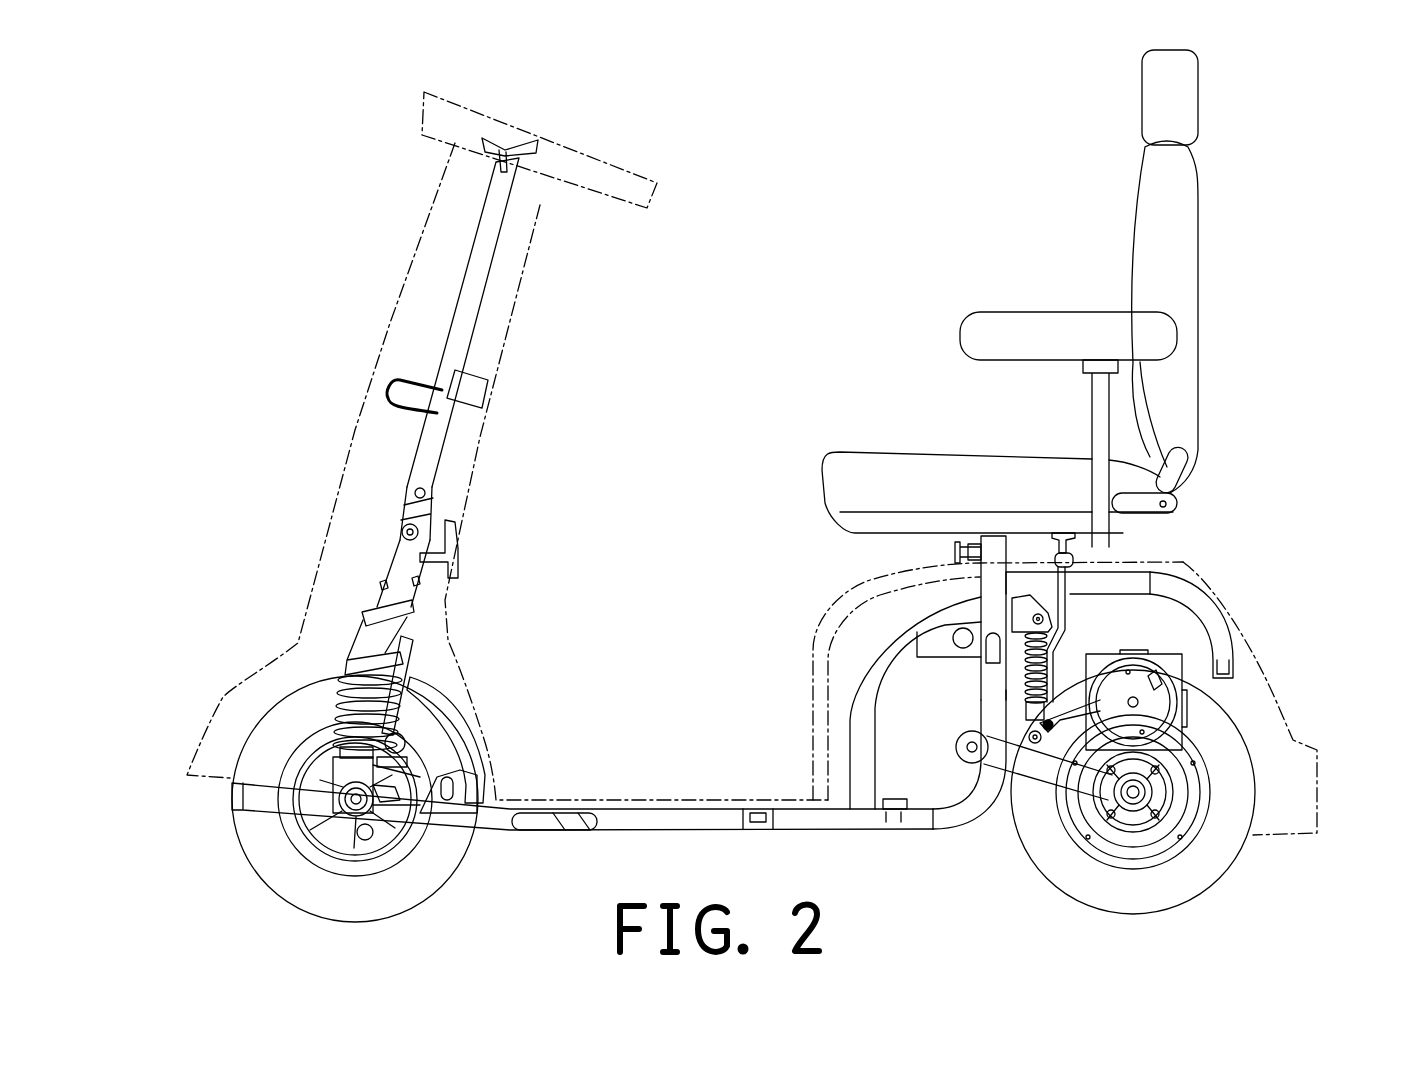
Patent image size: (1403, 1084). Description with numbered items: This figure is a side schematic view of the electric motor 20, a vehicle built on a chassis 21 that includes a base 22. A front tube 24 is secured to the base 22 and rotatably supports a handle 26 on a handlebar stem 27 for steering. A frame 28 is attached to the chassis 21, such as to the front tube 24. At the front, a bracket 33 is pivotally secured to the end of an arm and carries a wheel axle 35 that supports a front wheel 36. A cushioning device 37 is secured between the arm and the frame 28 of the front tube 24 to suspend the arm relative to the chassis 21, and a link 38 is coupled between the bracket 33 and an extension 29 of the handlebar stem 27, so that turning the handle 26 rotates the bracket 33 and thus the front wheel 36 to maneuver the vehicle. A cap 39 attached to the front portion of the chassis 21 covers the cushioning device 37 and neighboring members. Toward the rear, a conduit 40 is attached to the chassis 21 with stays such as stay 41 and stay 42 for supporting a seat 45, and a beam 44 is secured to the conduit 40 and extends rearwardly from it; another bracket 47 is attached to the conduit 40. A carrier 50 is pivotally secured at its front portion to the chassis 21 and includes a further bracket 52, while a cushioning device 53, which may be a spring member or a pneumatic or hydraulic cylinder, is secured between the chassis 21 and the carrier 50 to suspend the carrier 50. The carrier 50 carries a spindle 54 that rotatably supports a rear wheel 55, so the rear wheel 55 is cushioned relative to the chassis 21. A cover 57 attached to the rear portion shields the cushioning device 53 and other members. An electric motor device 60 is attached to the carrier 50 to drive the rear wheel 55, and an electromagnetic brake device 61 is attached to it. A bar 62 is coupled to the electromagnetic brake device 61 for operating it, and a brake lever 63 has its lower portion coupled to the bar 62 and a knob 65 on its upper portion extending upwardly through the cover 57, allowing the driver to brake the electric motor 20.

The electric motor 20 is at (787, 225).
The chassis 21 is at (700, 822).
The base 22 is at (412, 679).
The front tube 24 is at (372, 637).
The handle 26 is at (642, 175).
The handlebar stem 27 is at (393, 563).
The frame 28 is at (409, 673).
The extension 29 is at (398, 800).
The bracket 33 is at (363, 772).
The wheel axle 35 is at (385, 838).
The front wheel 36 is at (272, 870).
The cushioning device 37 is at (337, 697).
The link 38 is at (406, 743).
The cap 39 is at (213, 757).
The conduit 40 is at (993, 555).
The stay 41 is at (923, 630).
The stay 42 is at (935, 646).
The beam 44 is at (1130, 585).
The seat 45 is at (868, 455).
The bracket 47 is at (1030, 608).
The carrier 50 is at (1180, 733).
The bracket 52 is at (1012, 770).
The cushioning device 53 is at (967, 697).
The spindle 54 is at (1135, 795).
The rear wheel 55 is at (1223, 857).
The cover 57 is at (1217, 600).
The electric motor device 60 is at (1150, 680).
The electromagnetic brake device 61 is at (1158, 672).
The bar 62 is at (1047, 722).
The brake lever 63 is at (1063, 620).
The knob 65 is at (1062, 533).